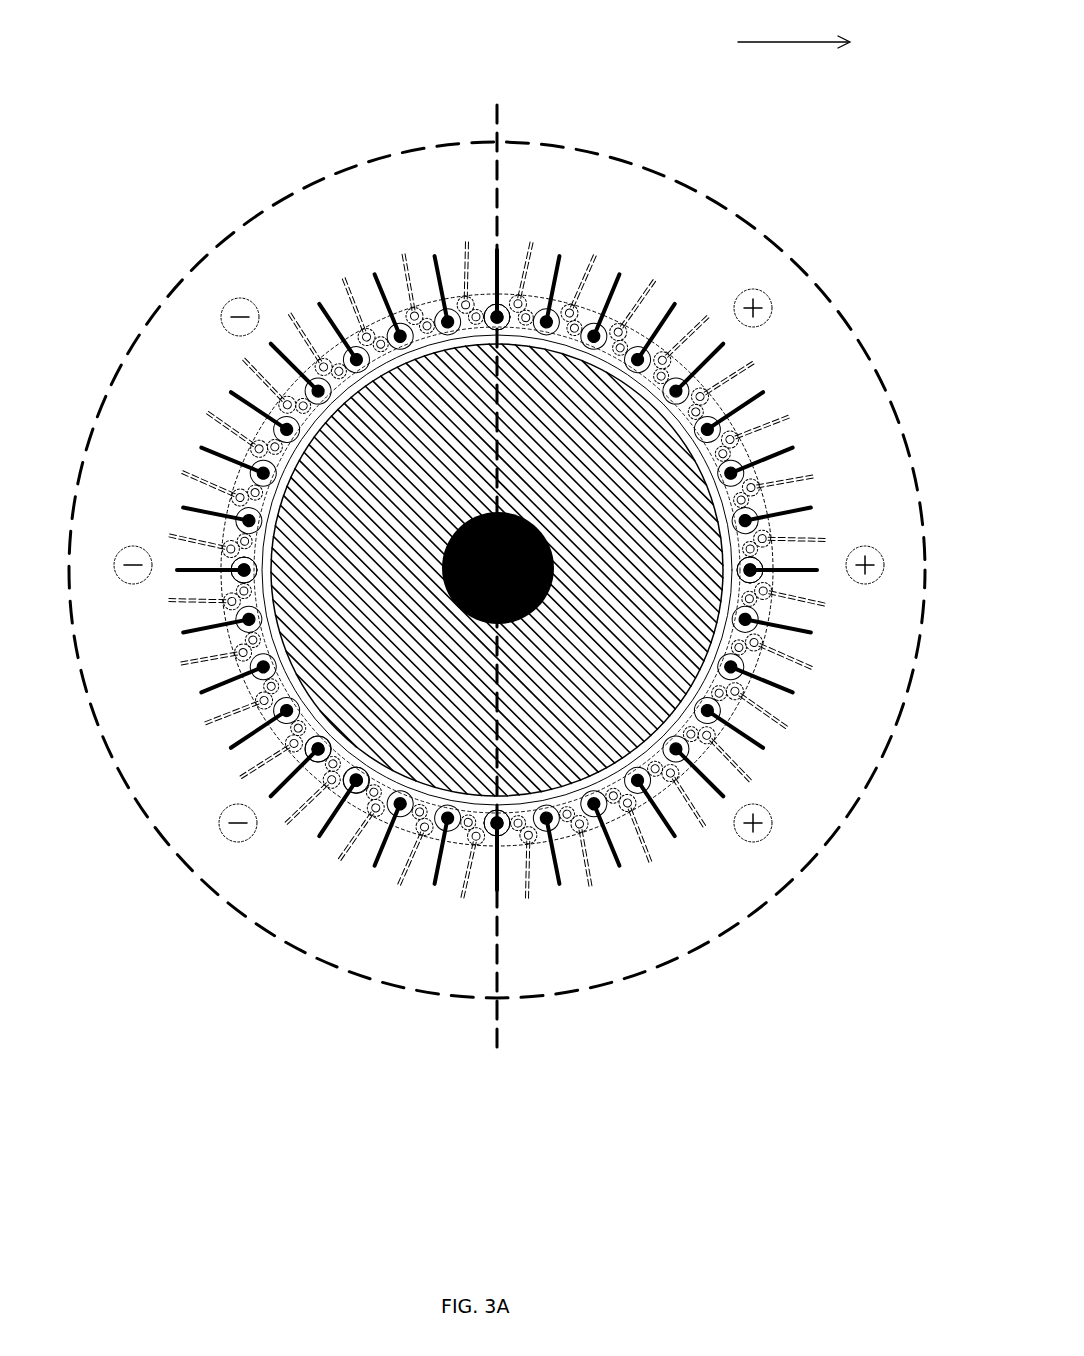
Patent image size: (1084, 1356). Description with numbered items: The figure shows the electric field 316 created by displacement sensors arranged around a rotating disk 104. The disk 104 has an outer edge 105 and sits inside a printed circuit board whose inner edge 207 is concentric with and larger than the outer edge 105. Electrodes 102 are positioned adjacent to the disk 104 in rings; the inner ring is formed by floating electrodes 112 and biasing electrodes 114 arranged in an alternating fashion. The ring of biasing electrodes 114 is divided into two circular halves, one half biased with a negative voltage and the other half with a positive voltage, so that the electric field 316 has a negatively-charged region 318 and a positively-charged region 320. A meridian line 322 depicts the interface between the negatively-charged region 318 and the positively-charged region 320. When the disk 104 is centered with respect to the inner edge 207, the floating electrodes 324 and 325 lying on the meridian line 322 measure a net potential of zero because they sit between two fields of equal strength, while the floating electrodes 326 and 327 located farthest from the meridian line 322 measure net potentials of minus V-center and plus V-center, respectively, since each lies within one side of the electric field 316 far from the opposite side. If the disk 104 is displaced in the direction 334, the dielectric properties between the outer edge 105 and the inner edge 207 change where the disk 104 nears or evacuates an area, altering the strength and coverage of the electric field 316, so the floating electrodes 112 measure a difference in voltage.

The electrodes 102 is at (281, 436).
The rotating disk 104 is at (446, 390).
The outer edge 105 is at (451, 388).
The floating electrodes 112 is at (152, 942).
The biasing electrodes 114 is at (270, 1048).
The inner edge 207 is at (598, 350).
The electric field 316 is at (268, 208).
The negatively-charged region 318 is at (170, 442).
The positively-charged region 320 is at (862, 442).
The meridian line 322 is at (500, 1032).
The floating electrode 324 is at (515, 300).
The floating electrode 325 is at (497, 829).
The floating electrode 326 is at (241, 576).
The floating electrode 327 is at (754, 574).
The direction 334 is at (794, 30).